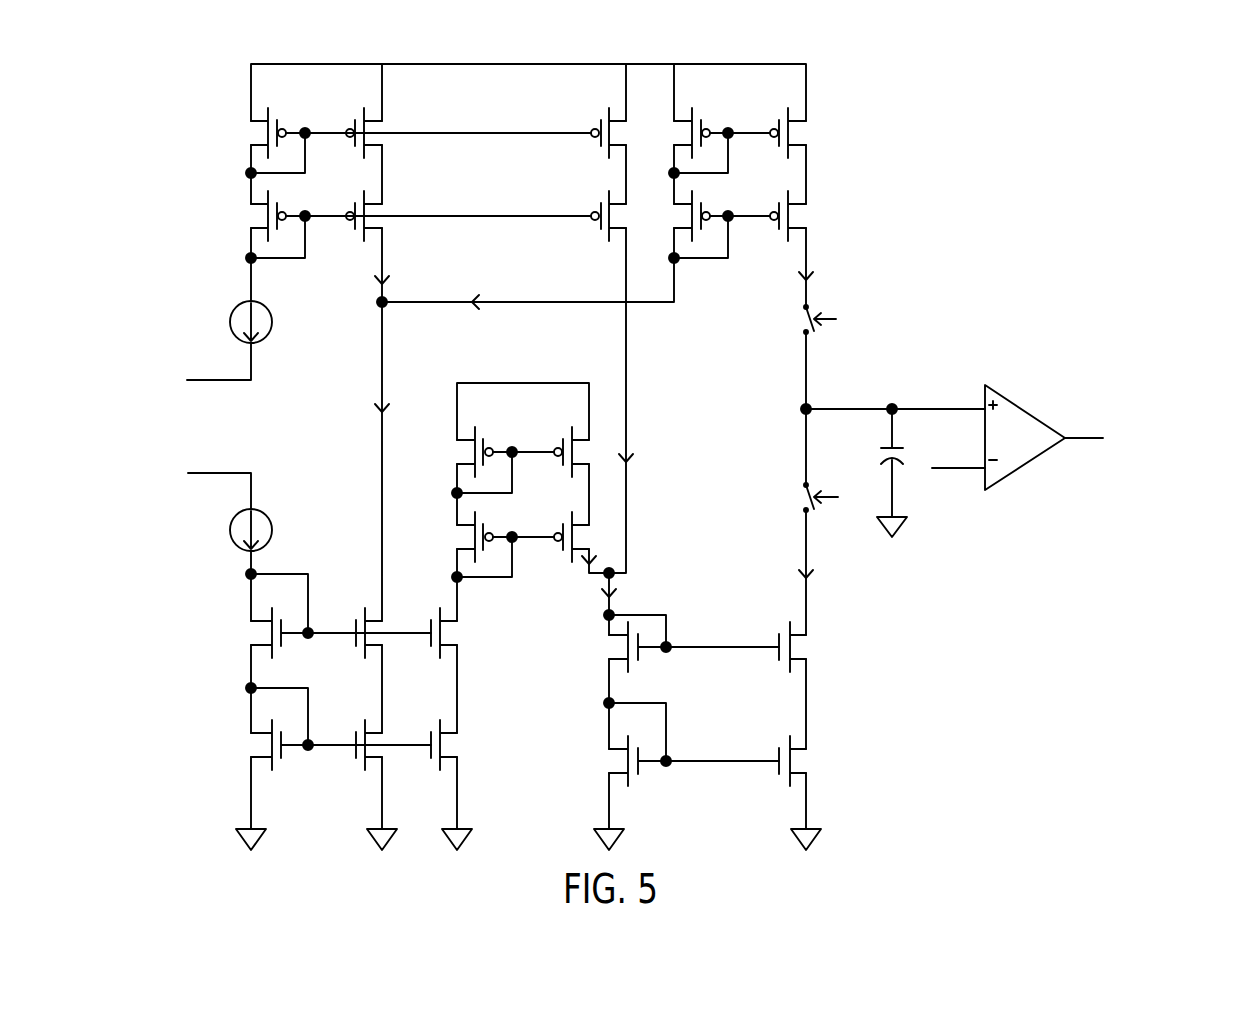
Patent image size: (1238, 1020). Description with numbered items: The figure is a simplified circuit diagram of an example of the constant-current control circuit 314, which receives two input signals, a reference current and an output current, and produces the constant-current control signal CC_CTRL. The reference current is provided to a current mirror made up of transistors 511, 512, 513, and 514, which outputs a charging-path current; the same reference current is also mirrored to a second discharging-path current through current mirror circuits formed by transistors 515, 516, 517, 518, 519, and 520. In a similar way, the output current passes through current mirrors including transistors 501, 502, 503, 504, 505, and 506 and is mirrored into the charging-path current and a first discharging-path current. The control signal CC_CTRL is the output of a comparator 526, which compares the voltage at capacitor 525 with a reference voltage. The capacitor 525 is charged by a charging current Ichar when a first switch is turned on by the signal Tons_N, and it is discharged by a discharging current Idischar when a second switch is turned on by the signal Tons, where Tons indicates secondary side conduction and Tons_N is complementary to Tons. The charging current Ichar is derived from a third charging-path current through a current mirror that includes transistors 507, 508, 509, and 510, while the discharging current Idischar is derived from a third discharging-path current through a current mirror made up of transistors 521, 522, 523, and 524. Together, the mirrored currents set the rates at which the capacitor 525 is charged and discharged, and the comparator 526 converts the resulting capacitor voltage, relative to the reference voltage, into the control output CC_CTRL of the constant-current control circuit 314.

The constant-current control circuit 314 is at (668, 445).
The transistor 501 is at (256, 133).
The transistor 502 is at (256, 216).
The transistor 503 is at (448, 135).
The transistor 504 is at (448, 216).
The transistor 505 is at (587, 135).
The transistor 506 is at (600, 223).
The transistor 507 is at (701, 125).
The transistor 508 is at (701, 242).
The transistor 509 is at (790, 133).
The transistor 510 is at (790, 216).
The transistor 511 is at (323, 633).
The transistor 512 is at (322, 745).
The transistor 513 is at (362, 622).
The transistor 514 is at (359, 735).
The transistor 515 is at (461, 633).
The transistor 516 is at (464, 745).
The transistor 517 is at (489, 452).
The transistor 518 is at (489, 537).
The transistor 519 is at (584, 452).
The transistor 520 is at (585, 537).
The transistor 521 is at (673, 647).
The transistor 522 is at (677, 761).
The transistor 523 is at (809, 761).
The transistor 524 is at (809, 647).
The capacitor 525 is at (872, 473).
The comparator 526 is at (1044, 435).